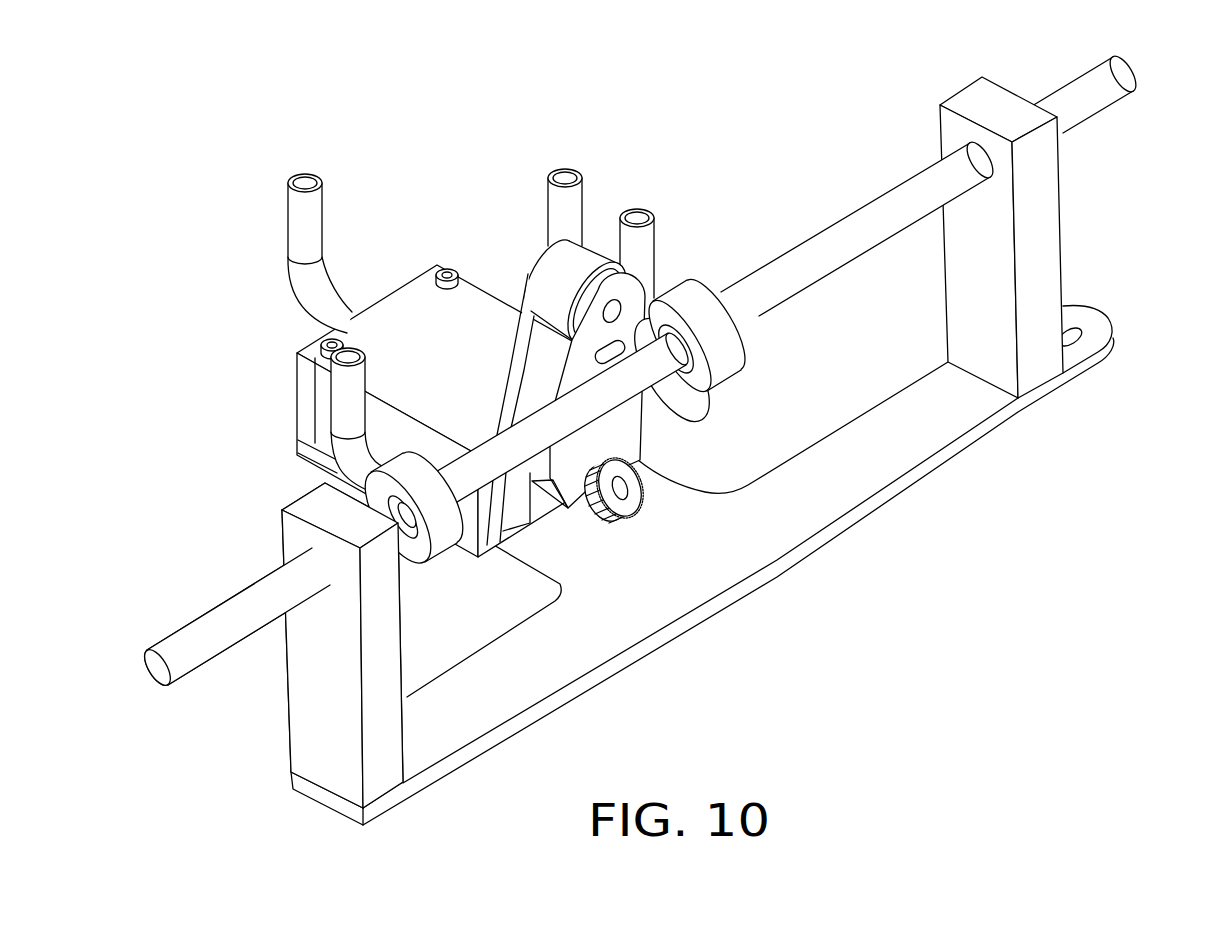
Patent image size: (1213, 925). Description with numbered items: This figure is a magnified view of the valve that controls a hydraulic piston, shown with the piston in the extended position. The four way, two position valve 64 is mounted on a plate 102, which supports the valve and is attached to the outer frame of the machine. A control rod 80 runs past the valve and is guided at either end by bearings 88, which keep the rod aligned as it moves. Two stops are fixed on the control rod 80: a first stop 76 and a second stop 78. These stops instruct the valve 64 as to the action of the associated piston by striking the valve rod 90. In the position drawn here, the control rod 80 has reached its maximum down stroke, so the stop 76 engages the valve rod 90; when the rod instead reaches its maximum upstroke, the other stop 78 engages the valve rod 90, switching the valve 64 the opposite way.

The four way, two position valve 64 is at (408, 303).
The stop 76 is at (702, 289).
The stop 78 is at (445, 535).
The control rod 80 is at (835, 243).
The bearings 88 is at (978, 105).
The valve rod 90 is at (700, 423).
The plate 102 is at (778, 520).